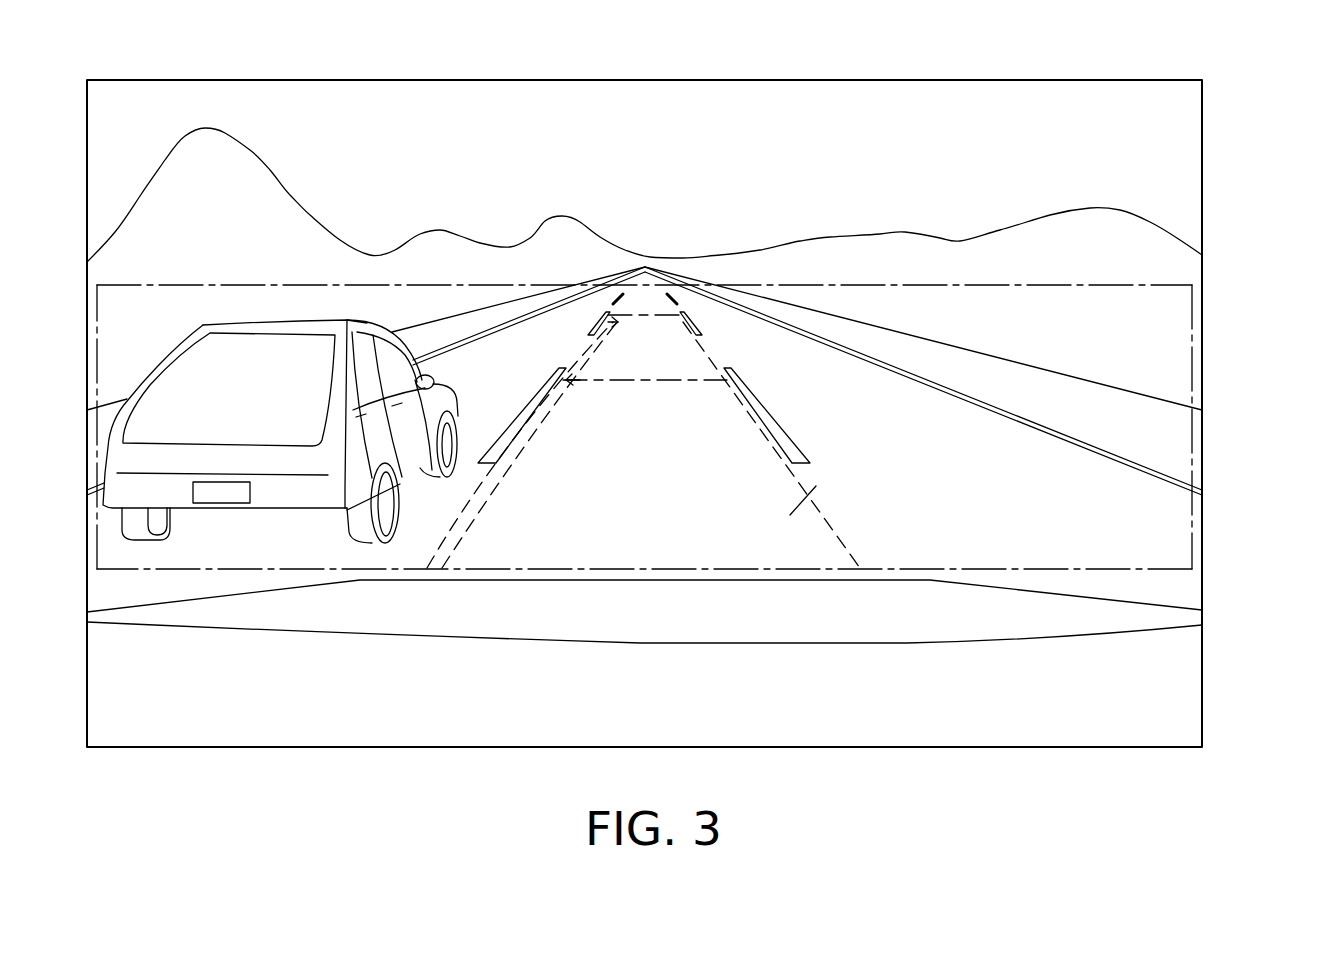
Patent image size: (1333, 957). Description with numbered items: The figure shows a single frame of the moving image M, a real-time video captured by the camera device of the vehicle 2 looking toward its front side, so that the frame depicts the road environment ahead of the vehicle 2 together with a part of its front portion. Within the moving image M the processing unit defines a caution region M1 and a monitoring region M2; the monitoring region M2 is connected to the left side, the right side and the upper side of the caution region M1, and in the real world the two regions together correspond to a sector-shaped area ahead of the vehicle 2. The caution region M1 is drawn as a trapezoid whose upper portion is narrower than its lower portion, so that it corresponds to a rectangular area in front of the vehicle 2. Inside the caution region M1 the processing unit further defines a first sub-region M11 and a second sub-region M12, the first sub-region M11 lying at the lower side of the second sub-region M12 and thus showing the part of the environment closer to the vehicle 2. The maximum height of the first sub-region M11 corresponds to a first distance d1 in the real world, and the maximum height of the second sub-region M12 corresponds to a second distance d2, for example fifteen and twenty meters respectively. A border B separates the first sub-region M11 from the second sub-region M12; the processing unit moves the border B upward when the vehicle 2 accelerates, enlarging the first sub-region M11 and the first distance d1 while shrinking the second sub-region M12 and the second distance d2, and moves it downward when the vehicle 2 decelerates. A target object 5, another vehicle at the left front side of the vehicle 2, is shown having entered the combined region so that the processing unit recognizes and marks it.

The moving image M is at (1208, 118).
The monitoring region M2 is at (1049, 284).
The caution region M1 is at (669, 445).
The first sub-region M11 is at (805, 493).
The second sub-region M12 is at (678, 355).
The border B is at (703, 390).
The first distance d1 is at (548, 431).
The second distance d2 is at (621, 339).
The target object 5 is at (437, 398).
The vehicle 2 is at (1040, 613).